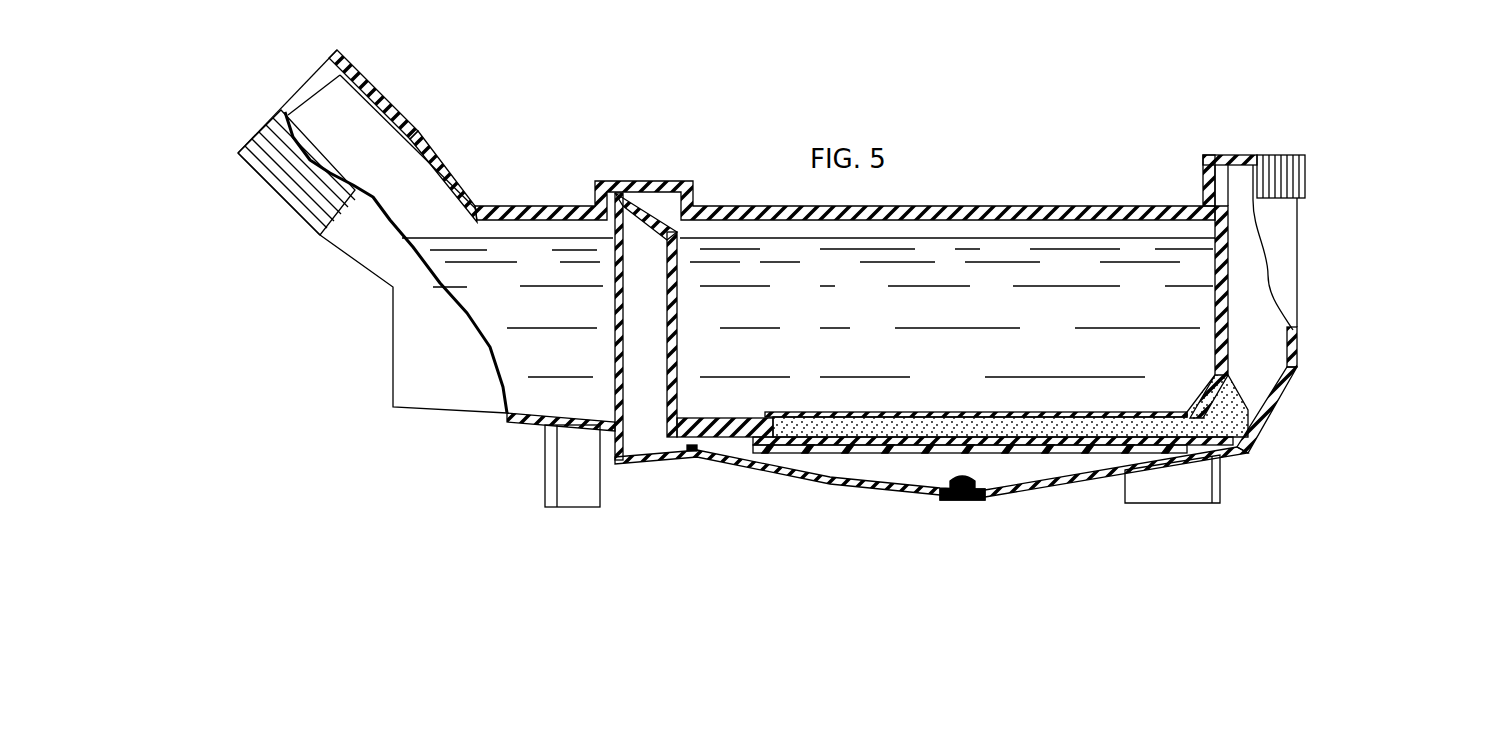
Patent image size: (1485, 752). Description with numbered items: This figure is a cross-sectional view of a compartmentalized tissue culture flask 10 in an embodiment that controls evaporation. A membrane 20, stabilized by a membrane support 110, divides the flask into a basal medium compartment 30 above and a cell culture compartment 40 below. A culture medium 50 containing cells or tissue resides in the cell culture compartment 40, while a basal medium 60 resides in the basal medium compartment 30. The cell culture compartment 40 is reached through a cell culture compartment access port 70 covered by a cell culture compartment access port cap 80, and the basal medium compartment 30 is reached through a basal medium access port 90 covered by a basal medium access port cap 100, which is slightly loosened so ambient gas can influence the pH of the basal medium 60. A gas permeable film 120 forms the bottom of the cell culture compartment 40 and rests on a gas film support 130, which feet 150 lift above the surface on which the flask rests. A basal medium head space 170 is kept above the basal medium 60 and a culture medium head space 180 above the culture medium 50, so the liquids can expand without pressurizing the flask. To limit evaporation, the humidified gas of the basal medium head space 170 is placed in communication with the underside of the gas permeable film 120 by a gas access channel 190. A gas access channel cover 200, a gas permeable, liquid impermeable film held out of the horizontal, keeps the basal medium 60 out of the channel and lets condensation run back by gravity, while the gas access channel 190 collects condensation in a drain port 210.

The compartmentalized tissue culture flask 10 is at (393, 353).
The membrane 20 is at (790, 417).
The basal medium compartment 30 is at (453, 175).
The cell culture compartment 40 is at (1302, 258).
The culture medium 50 is at (1240, 417).
The basal medium 60 is at (963, 324).
The cell culture compartment access port 70 is at (1240, 178).
The cell culture compartment access port cap 80 is at (1302, 163).
The basal medium access port 90 is at (323, 117).
The basal medium access port cap 100 is at (277, 190).
The membrane support 110 is at (1074, 420).
The gas permeable film 120 is at (797, 440).
The gas film support 130 is at (913, 453).
The feet 150 is at (547, 505).
The basal medium head space 170 is at (947, 230).
The culture medium head space 180 is at (1267, 335).
The gas access channel 190 is at (645, 363).
The gas access channel cover 200 is at (650, 227).
The drain port 210 is at (985, 500).